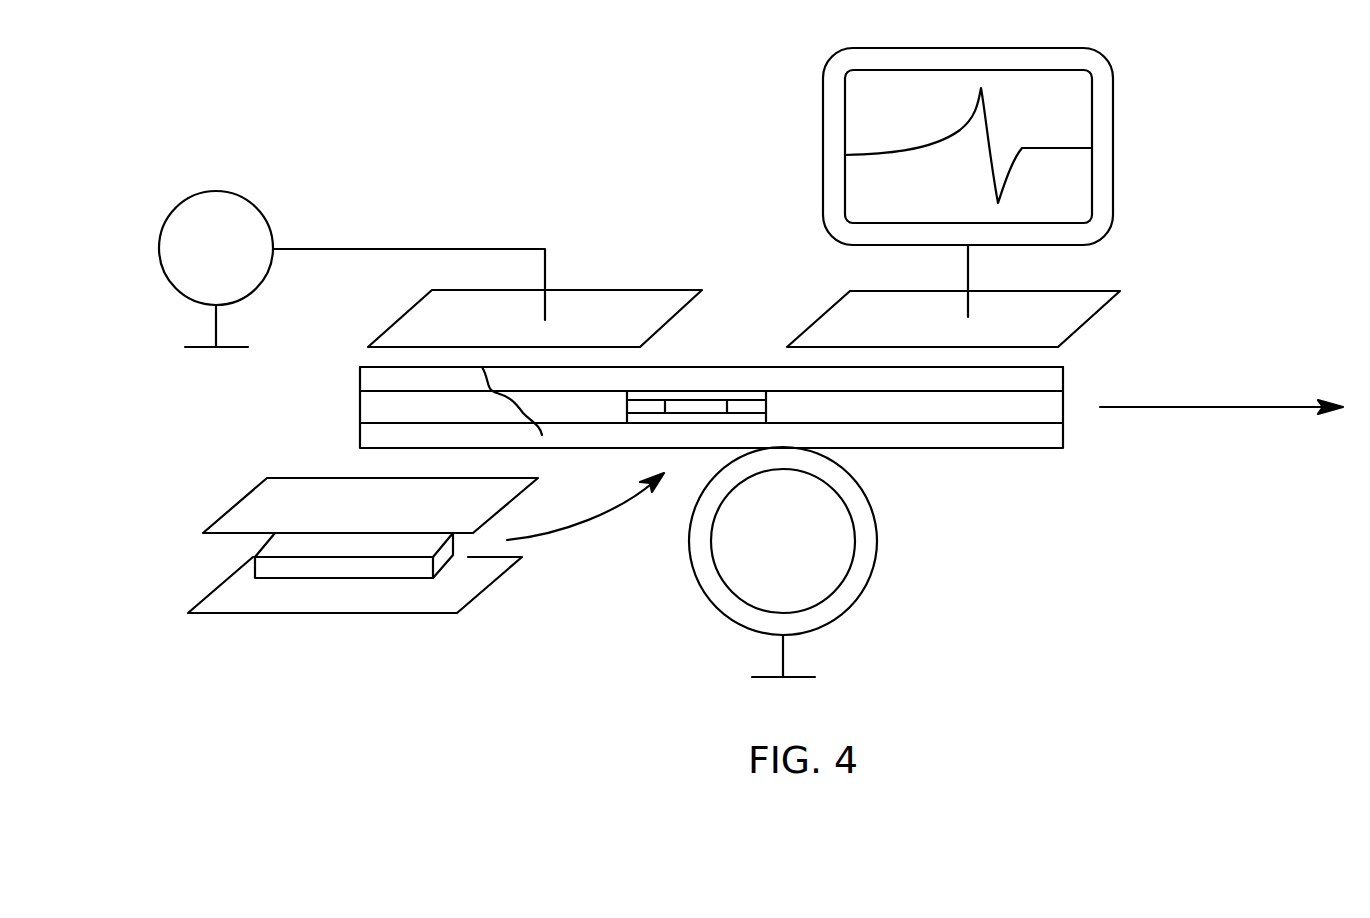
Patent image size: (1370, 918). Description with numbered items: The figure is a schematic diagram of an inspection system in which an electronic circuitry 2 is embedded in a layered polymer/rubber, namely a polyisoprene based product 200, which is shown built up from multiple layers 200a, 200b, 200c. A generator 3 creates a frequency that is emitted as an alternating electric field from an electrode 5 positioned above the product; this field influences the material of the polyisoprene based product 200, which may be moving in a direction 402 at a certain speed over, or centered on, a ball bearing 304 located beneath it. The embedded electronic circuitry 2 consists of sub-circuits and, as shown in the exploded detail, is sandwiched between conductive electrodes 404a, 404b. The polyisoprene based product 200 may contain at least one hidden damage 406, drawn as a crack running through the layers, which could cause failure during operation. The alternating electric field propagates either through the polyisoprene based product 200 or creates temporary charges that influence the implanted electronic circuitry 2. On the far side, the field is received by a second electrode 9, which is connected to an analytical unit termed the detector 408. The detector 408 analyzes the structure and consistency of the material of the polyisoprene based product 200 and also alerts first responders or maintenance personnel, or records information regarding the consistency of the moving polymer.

The generator 3 is at (250, 228).
The electrode 5 is at (607, 305).
The electronic circuitry 2 is at (702, 407).
The second electrode 9 is at (1072, 313).
The detector 408 is at (1072, 190).
The polyisoprene based product 200 is at (655, 447).
The layer 200a is at (370, 372).
The layer 200b is at (370, 403).
The layer 200c is at (370, 438).
The hidden damage 406 is at (542, 435).
The conductive electrode 404a is at (250, 508).
The conductive electrode 404b is at (215, 600).
The ball bearing 304 is at (830, 530).
The direction 402 is at (1210, 407).